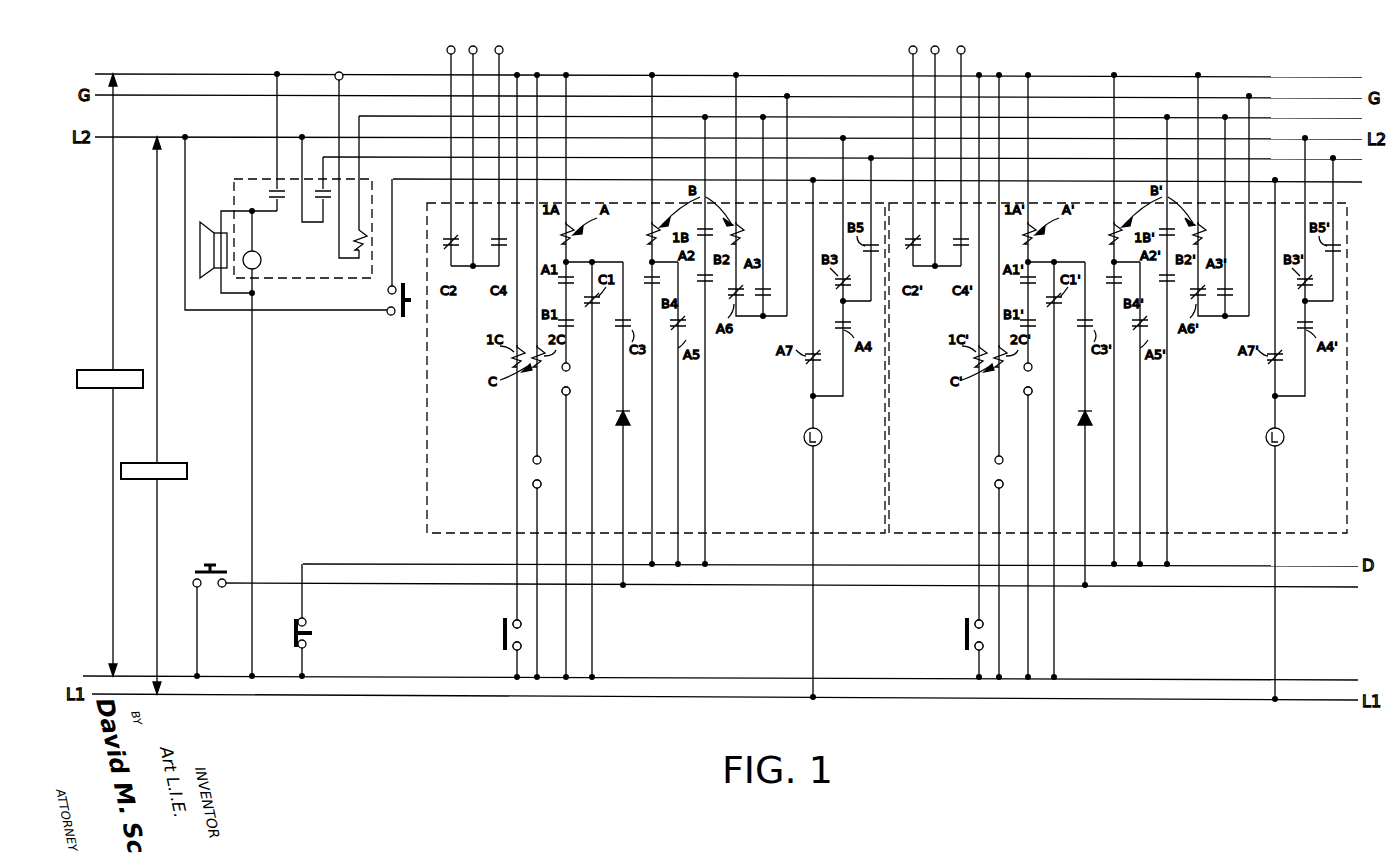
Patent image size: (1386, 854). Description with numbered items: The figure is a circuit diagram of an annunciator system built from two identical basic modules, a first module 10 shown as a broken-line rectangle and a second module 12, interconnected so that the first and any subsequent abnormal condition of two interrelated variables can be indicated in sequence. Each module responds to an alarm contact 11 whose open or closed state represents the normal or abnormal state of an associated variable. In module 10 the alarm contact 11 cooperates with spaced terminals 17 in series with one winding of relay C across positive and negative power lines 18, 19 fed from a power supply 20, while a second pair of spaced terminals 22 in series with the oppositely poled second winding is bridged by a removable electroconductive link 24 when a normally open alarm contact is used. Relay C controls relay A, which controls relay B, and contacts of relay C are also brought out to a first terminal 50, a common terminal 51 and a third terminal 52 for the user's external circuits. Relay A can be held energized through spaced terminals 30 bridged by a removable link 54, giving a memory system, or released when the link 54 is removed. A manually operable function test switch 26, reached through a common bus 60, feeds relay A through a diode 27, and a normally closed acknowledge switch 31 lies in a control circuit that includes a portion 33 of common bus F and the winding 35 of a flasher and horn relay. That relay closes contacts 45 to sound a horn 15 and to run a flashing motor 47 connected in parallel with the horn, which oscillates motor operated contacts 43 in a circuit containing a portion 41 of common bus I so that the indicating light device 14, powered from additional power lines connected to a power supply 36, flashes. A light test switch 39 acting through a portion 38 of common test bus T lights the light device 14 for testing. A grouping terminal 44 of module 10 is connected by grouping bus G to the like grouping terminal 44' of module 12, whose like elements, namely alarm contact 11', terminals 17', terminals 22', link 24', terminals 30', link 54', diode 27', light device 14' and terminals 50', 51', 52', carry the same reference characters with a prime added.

The power line 19 is at (103, 72).
The power line 18 is at (88, 676).
The horn 15 is at (200, 222).
The normally open contacts 45 is at (282, 216).
The motor operated contacts 43 is at (325, 218).
The winding of flasher and horn relay 35 is at (363, 254).
The light test switch 39 is at (403, 282).
The flashing motor 47 is at (262, 260).
The power supply 20 is at (88, 370).
The power supply 36 is at (172, 462).
The function test switch 26 is at (224, 569).
The acknowledge switch 31 is at (294, 648).
The first terminal 50 is at (461, 144).
The common terminal 51 is at (486, 145).
The third terminal 52 is at (510, 144).
The portion of common bus F 33 is at (590, 118).
The portion of common bus I 41 is at (588, 158).
The portion of common test bus T 38 is at (588, 180).
The grouping terminal 44 is at (804, 196).
The annunciator module 10 is at (427, 483).
The annunciator module 12 is at (885, 382).
The spaced terminals 30 is at (577, 379).
The removable electroconductive link 54 is at (556, 399).
The removable electroconductive link 24 is at (515, 478).
The spaced terminals 22 is at (549, 472).
The diode 27 is at (612, 439).
The indicating light device 14 is at (793, 439).
The spaced terminals 17 is at (503, 635).
The alarm contact 11 is at (491, 634).
The common bus 60 is at (1342, 590).
The first terminal 50' is at (926, 144).
The common terminal 51' is at (951, 145).
The third terminal 52' is at (974, 144).
The grouping terminal 44' is at (1268, 196).
The spaced terminals 30' is at (1042, 379).
The removable electroconductive link 54' is at (1018, 399).
The removable electroconductive link 24' is at (977, 478).
The spaced terminals 22' is at (1014, 472).
The diode 27' is at (1074, 439).
The indicating light device 14' is at (1255, 439).
The spaced terminals 17' is at (965, 635).
The alarm contact 11' is at (953, 634).